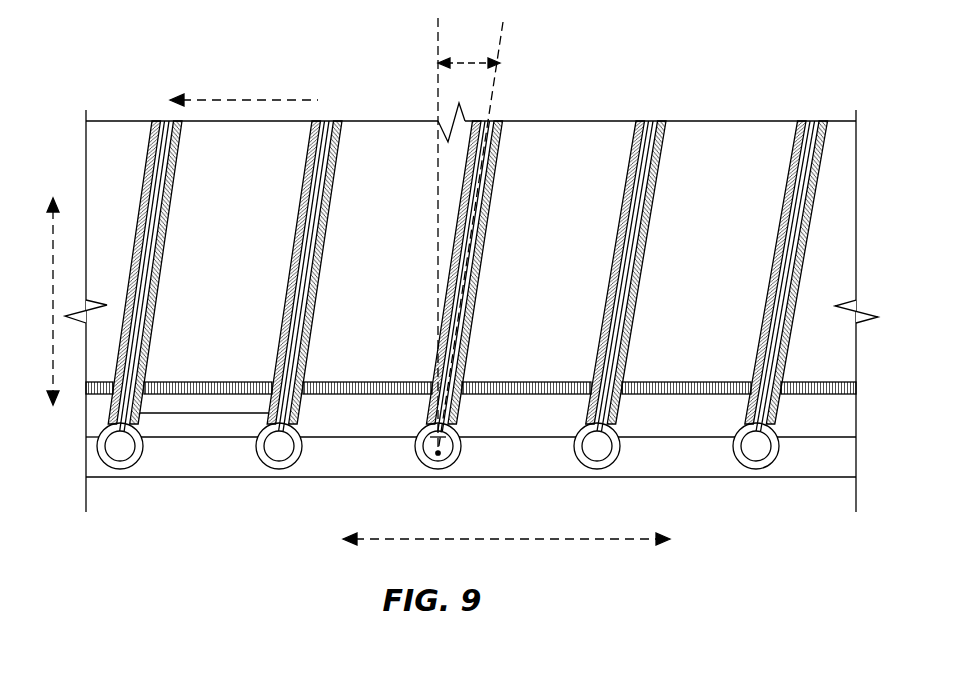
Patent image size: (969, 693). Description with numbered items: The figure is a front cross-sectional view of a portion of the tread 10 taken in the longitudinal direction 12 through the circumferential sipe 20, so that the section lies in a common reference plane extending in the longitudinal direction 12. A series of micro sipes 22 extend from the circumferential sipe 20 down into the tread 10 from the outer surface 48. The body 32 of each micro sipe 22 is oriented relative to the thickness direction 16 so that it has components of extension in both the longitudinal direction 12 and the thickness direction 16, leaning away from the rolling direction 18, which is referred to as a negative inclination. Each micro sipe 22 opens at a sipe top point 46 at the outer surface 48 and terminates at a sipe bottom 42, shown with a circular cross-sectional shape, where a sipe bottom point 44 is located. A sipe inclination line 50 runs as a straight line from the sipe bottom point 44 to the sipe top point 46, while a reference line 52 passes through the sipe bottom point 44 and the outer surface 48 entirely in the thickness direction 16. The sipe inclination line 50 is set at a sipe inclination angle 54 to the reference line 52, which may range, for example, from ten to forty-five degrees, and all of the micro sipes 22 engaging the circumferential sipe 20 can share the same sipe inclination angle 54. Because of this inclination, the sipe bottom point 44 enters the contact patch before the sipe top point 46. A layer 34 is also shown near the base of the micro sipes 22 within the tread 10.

The tread 10 is at (777, 131).
The longitudinal direction 12 is at (541, 540).
The thickness direction 16 is at (52, 300).
The rolling direction 18 is at (243, 100).
The circumferential sipe 20 is at (845, 461).
The micro sipe 22 is at (657, 182).
The body 32 is at (160, 198).
The cross member layer 34 is at (92, 466).
The sipe bottom 42 is at (452, 445).
The sipe bottom point 44 is at (432, 459).
The sipe top point 46 is at (492, 121).
The outer surface 48 is at (585, 112).
The sipe inclination line 50 is at (505, 46).
The reference line 52 is at (438, 78).
The sipe inclination angle 54 is at (460, 63).